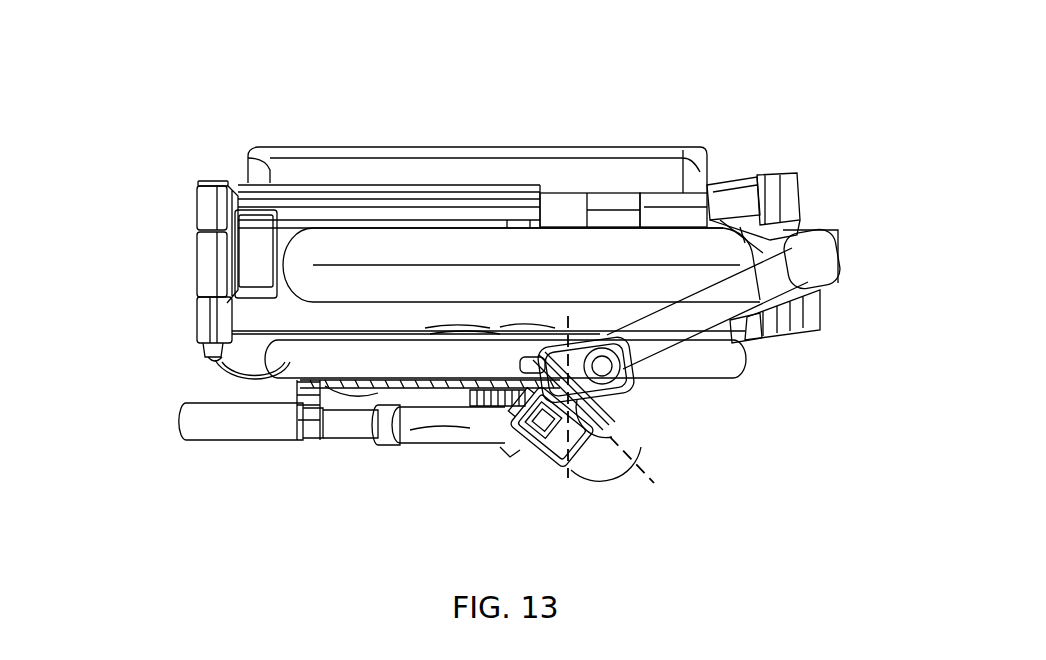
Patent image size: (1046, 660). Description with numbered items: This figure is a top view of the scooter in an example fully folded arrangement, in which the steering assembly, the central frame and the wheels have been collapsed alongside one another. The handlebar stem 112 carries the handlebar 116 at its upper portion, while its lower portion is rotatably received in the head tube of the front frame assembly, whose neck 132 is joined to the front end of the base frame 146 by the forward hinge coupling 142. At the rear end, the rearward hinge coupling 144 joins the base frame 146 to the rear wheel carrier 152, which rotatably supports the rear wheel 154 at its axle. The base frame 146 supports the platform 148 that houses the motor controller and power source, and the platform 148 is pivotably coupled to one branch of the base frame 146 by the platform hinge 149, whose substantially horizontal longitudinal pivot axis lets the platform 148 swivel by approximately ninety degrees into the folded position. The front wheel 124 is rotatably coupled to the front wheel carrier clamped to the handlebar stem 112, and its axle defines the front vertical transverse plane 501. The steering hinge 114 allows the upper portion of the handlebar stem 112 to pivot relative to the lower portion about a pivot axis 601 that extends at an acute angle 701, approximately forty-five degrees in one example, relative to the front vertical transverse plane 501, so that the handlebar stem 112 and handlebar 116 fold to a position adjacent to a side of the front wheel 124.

The handlebar stem 112 is at (440, 443).
The steering hinge 114 is at (585, 400).
The handlebar 116 is at (183, 435).
The front wheel 124 is at (267, 355).
The neck 132 is at (752, 316).
The forward hinge coupling 142 is at (770, 173).
The rearward hinge coupling 144 is at (217, 180).
The base frame 146 is at (235, 298).
The platform 148 is at (553, 148).
The platform hinge 149 is at (610, 190).
The rear wheel carrier 152 is at (378, 182).
The rear wheel 154 is at (750, 247).
The front vertical transverse plane 501 is at (562, 483).
The pivot axis 601 is at (653, 480).
The acute angle 701 is at (600, 483).